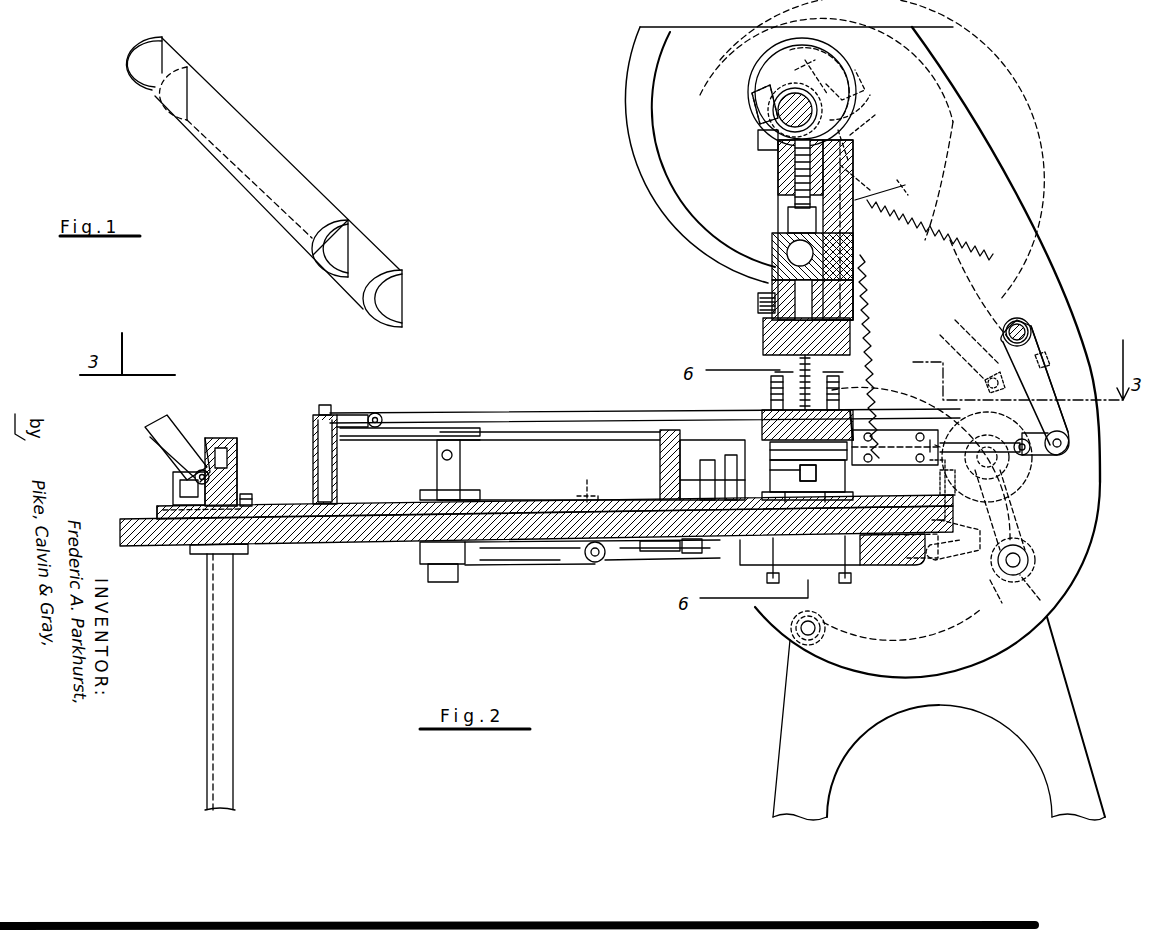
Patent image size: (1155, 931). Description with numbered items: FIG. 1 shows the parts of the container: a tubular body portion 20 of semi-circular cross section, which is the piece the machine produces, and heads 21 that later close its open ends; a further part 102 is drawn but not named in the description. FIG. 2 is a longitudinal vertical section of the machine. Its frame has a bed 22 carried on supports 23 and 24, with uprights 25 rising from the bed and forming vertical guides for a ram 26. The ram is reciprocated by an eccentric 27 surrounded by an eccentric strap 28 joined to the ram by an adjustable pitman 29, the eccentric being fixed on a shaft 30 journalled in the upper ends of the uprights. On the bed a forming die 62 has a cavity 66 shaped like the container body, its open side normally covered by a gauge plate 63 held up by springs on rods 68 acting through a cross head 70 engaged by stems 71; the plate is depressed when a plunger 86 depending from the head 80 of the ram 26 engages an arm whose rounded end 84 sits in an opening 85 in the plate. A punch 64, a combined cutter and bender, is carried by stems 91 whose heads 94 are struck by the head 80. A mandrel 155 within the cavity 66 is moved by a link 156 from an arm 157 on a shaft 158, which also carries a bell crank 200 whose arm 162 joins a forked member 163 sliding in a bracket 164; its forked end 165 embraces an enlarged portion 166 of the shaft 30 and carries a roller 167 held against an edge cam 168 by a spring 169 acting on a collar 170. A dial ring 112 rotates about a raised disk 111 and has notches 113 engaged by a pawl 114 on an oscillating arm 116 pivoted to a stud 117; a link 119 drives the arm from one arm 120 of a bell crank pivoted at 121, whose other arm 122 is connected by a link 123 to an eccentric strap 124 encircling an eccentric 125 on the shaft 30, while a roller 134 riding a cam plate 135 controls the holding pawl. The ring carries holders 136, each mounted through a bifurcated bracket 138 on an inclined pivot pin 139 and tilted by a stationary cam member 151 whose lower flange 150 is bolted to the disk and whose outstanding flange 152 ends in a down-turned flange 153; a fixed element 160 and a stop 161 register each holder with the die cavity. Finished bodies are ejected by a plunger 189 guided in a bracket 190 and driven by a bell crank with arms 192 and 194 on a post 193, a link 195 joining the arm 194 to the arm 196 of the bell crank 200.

In FIG. 1, the tubular body portion 20 is at (322, 193).
In FIG. 1, the heads 21 is at (150, 57).
In FIG. 1, the inner partition 102 is at (340, 285).
In FIG. 2, the bed 22 is at (365, 545).
In FIG. 2, the support 23 is at (212, 668).
In FIG. 2, the support 24 is at (1052, 687).
In FIG. 2, the uprights 25 is at (1005, 185).
In FIG. 2, the ram 26 is at (758, 298).
In FIG. 2, the eccentric 27 is at (782, 62).
In FIG. 2, the eccentric strap 28 is at (752, 80).
In FIG. 2, the adjustable pitman 29 is at (788, 217).
In FIG. 2, the shaft 30 is at (785, 118).
In FIG. 2, the forming die 62 is at (850, 412).
In FIG. 2, the gauge plate 63 is at (845, 470).
In FIG. 2, the punch 64 is at (845, 410).
In FIG. 2, the cavity 66 is at (790, 448).
In FIG. 2, the rods 68 is at (800, 565).
In FIG. 2, the cross head 70 is at (825, 568).
In FIG. 2, the stems 71 is at (853, 497).
In FIG. 2, the head 80 is at (780, 335).
In FIG. 2, the rounded end 84 is at (807, 476).
In FIG. 2, the opening 85 is at (820, 478).
In FIG. 2, the plunger 86 is at (800, 368).
In FIG. 2, the stems 91 is at (770, 398).
In FIG. 2, the heads 94 is at (835, 377).
In FIG. 2, the raised disk 111 is at (300, 519).
In FIG. 2, the dial ring 112 is at (178, 512).
In FIG. 2, the notches 113 is at (160, 514).
In FIG. 2, the pawl 114 is at (592, 495).
In FIG. 2, the oscillating arm 116 is at (528, 566).
In FIG. 2, the stud 117 is at (448, 583).
In FIG. 2, the link 119 is at (628, 560).
In FIG. 2, the arm of bell crank 120 is at (1005, 495).
In FIG. 2, the pivot 121 is at (1030, 465).
In FIG. 2, the arm of bell crank 122 is at (950, 480).
In FIG. 2, the link 123 is at (890, 345).
In FIG. 2, the eccentric strap 124 is at (755, 112).
In FIG. 2, the eccentric 125 is at (778, 135).
In FIG. 2, the roller 134 is at (650, 553).
In FIG. 2, the cam plate 135 is at (690, 554).
In FIG. 2, the holders 136 is at (148, 430).
In FIG. 2, the bifurcated bracket 138 is at (173, 500).
In FIG. 2, the pivot pin 139 is at (210, 475).
In FIG. 2, the lower flange 150 is at (254, 496).
In FIG. 2, the cam member 151 is at (240, 442).
In FIG. 2, the outstanding flange 152 is at (230, 438).
In FIG. 2, the down-turned flange 153 is at (203, 452).
In FIG. 2, the mandrel 155 is at (775, 425).
In FIG. 2, the link 156 is at (1035, 452).
In FIG. 2, the arm 157 is at (1072, 425).
In FIG. 2, the shaft 158 is at (1030, 333).
In FIG. 2, the fixed element 160 is at (685, 470).
In FIG. 2, the stop 161 is at (770, 578).
In FIG. 2, the arm 162 is at (990, 375).
In FIG. 2, the forked member 163 is at (865, 178).
In FIG. 2, the bracket 164 is at (950, 325).
In FIG. 2, the forked end 165 is at (820, 65).
In FIG. 2, the enlarged portion 166 is at (845, 105).
In FIG. 2, the roller 167 is at (855, 140).
In FIG. 2, the edge cam 168 is at (852, 132).
In FIG. 2, the spring 169 is at (930, 250).
In FIG. 2, the collar 170 is at (887, 191).
In FIG. 2, the plunger 189 is at (455, 450).
In FIG. 2, the bracket 190 is at (460, 470).
In FIG. 2, the arm of bell crank 192 is at (395, 440).
In FIG. 2, the post 193 is at (324, 405).
In FIG. 2, the arm of bell crank 194 is at (375, 412).
In FIG. 2, the link 195 is at (583, 412).
In FIG. 2, the arm 196 is at (1045, 362).
In FIG. 2, the bell crank 200 is at (1025, 320).